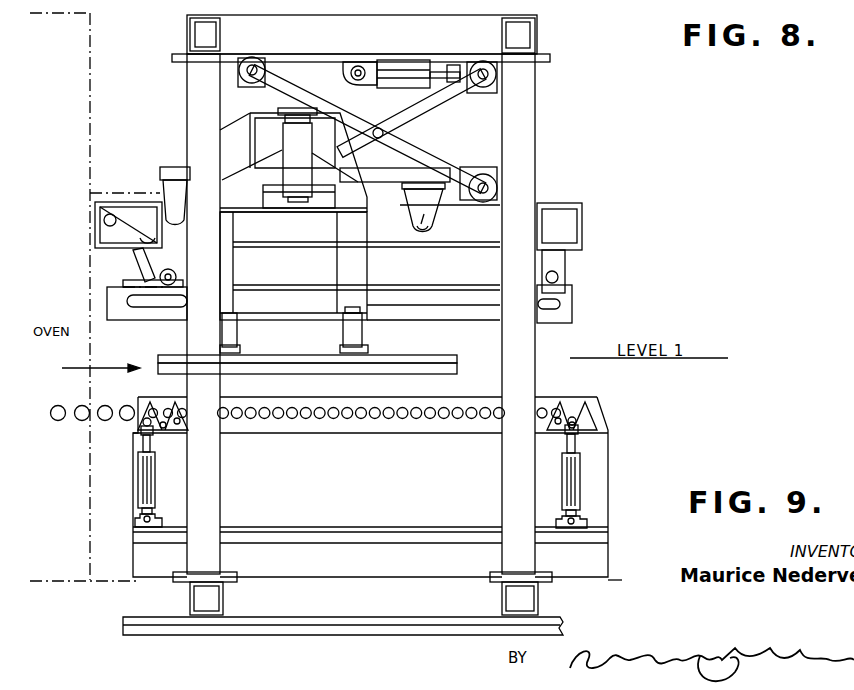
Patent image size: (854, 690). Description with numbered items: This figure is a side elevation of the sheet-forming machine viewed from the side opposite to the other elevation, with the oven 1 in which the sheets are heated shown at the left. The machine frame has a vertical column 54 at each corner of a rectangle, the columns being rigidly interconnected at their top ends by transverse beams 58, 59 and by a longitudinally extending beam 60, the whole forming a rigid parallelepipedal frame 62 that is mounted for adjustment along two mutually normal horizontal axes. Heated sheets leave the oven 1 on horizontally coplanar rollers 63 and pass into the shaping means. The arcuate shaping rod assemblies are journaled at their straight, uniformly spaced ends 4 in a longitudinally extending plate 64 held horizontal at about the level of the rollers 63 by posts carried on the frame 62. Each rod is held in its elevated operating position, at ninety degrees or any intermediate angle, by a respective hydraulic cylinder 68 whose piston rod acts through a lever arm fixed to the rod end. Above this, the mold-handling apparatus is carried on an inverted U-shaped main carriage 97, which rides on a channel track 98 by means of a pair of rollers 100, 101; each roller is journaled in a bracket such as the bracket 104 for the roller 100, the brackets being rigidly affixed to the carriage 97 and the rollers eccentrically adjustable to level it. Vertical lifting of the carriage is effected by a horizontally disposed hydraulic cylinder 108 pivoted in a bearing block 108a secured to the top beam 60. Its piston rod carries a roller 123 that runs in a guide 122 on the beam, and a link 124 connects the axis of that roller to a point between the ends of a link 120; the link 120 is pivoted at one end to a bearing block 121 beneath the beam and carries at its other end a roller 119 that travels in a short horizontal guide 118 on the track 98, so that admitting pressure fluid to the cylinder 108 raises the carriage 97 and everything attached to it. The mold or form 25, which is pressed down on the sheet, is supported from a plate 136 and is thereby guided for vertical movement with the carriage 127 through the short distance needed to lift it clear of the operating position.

The oven 1 is at (78, 104).
The rod assembly end 4 is at (250, 419).
The mold or form 25 is at (428, 372).
The vertical column 54 is at (200, 95).
The transverse beam 58 is at (190, 31).
The transverse beam 59 is at (538, 34).
The longitudinally extending beam 60 is at (288, 27).
The frame 62 is at (330, 638).
The rollers 63 is at (82, 421).
The longitudinally-extending plate 64 is at (320, 421).
The hydraulic cylinder 68 is at (147, 472).
The main carriage 97 is at (176, 166).
The channel track 98 is at (582, 210).
The roller 100 is at (438, 222).
The roller 101 is at (157, 234).
The bracket 104 is at (426, 226).
The hydraulic cylinder 108 is at (415, 66).
The bearing block 108a is at (352, 60).
The guide 118 is at (497, 178).
The roller 119 is at (490, 182).
The link 120 is at (412, 143).
The bearing block 121 is at (252, 57).
The guide 122 is at (497, 88).
The roller 123 is at (490, 90).
The link 124 is at (410, 112).
The carriage 127 is at (342, 192).
The plate 136 is at (395, 356).